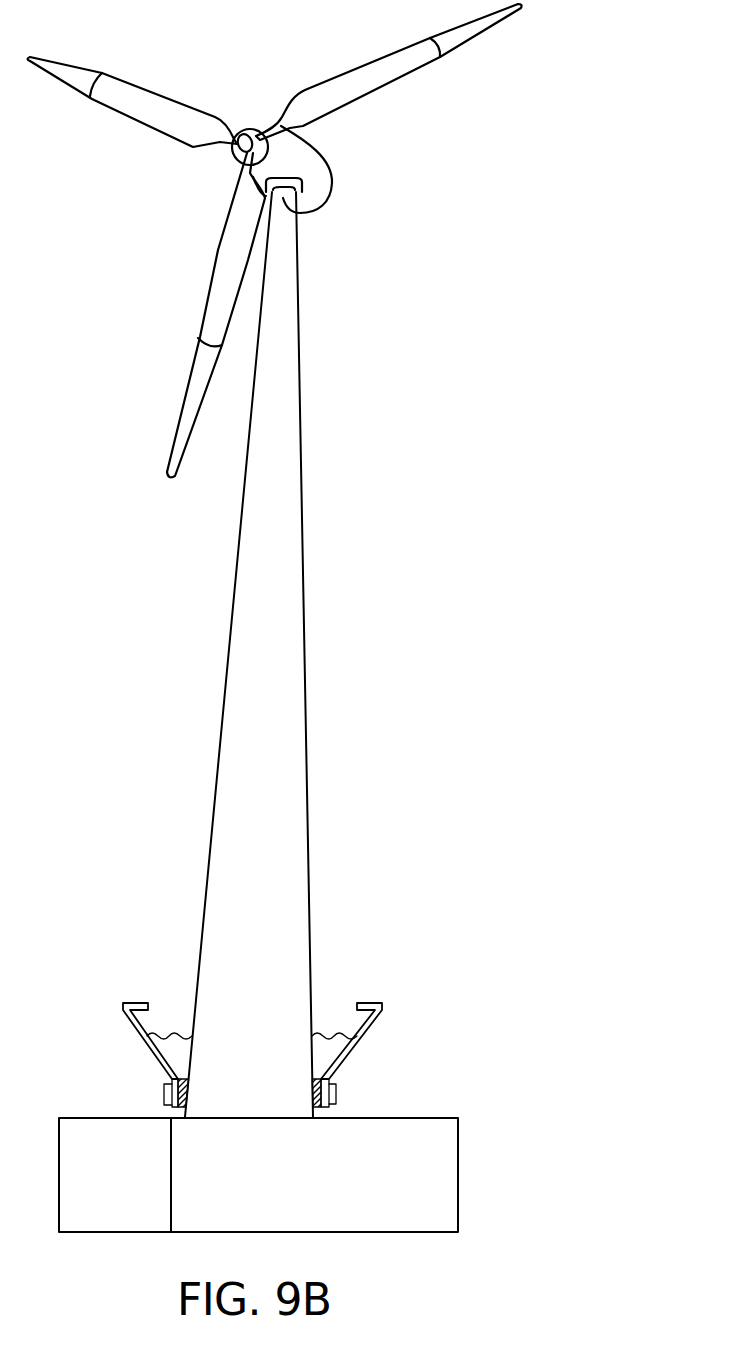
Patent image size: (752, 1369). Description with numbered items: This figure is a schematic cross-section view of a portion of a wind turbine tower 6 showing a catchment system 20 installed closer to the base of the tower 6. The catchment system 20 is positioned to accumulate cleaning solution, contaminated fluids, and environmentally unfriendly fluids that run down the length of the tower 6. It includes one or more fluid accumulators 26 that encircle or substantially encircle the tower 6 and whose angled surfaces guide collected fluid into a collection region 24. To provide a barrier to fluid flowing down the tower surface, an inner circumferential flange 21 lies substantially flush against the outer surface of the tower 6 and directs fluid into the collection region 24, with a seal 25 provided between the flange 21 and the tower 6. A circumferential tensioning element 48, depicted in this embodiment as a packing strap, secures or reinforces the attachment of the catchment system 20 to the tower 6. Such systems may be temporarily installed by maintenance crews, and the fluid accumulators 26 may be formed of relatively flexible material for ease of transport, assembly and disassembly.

The tower 6 is at (292, 572).
The catchment system 20 is at (419, 1033).
The inner circumferential flange 21 is at (328, 1108).
The collection region 24 is at (173, 1050).
The seal 25 is at (315, 1108).
The fluid accumulator 26 is at (140, 1038).
The tensioning element 48 is at (164, 1093).